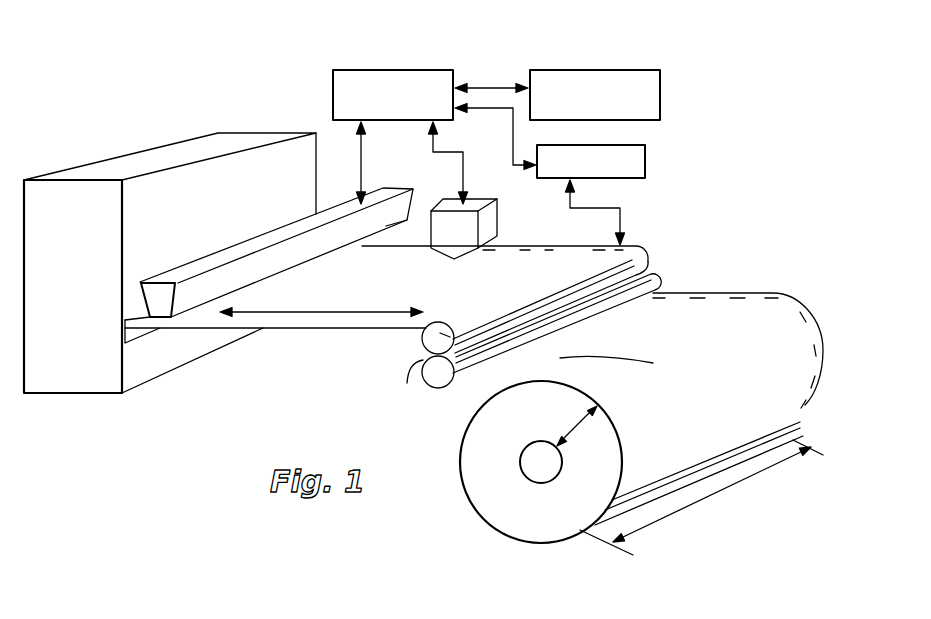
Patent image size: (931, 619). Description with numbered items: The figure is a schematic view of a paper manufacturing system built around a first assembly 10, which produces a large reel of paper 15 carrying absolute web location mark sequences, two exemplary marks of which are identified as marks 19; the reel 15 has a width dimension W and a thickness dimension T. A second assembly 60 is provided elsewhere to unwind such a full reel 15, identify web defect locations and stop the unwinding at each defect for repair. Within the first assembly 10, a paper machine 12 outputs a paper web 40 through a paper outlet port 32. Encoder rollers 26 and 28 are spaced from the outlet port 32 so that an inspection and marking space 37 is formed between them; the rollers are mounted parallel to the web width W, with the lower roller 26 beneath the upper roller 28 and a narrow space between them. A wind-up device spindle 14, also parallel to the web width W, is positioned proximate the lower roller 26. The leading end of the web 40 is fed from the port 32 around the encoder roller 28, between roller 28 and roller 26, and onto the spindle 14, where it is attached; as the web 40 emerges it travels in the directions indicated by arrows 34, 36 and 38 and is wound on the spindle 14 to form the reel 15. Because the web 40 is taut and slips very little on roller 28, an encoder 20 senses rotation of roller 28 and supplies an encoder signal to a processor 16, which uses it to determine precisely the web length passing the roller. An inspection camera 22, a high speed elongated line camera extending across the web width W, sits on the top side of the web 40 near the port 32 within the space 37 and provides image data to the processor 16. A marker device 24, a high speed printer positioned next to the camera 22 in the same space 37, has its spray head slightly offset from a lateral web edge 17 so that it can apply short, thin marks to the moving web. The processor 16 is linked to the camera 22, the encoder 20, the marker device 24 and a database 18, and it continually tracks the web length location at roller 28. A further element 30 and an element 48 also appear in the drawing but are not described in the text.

The first assembly 10 is at (132, 126).
The paper machine 12 is at (213, 210).
The wind-up device spindle 14 is at (522, 475).
The reel of paper 15 is at (568, 543).
The processor 16 is at (390, 72).
The lateral web edge 17 is at (722, 292).
The database 18 is at (625, 72).
The marks 19 is at (810, 308).
The encoder 20 is at (660, 148).
The inspection camera 22 is at (202, 298).
The marker device 24 is at (460, 230).
The encoder roller 26 is at (447, 388).
The encoder roller 28 is at (468, 358).
The web guide 30 is at (691, 275).
The paper outlet port 32 is at (133, 343).
The arrow 34 is at (553, 298).
The arrow 36 is at (421, 396).
The inspection and marking space 37 is at (302, 312).
The arrow 38 is at (668, 465).
The paper web 40 is at (367, 318).
The element 48 is at (324, 618).
The second assembly 60 is at (59, 609).
The thickness dimension T is at (577, 426).
The width dimension W is at (701, 497).